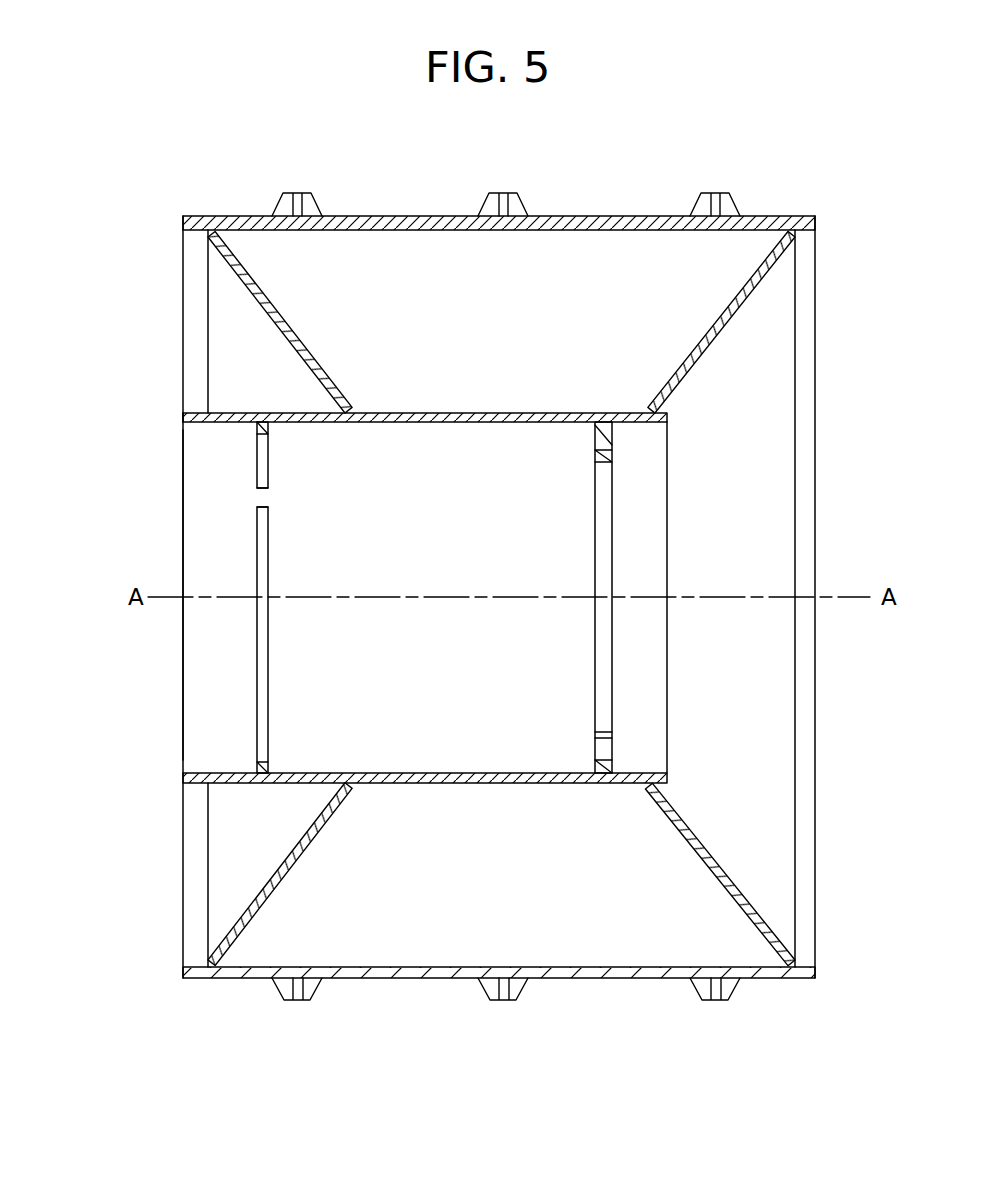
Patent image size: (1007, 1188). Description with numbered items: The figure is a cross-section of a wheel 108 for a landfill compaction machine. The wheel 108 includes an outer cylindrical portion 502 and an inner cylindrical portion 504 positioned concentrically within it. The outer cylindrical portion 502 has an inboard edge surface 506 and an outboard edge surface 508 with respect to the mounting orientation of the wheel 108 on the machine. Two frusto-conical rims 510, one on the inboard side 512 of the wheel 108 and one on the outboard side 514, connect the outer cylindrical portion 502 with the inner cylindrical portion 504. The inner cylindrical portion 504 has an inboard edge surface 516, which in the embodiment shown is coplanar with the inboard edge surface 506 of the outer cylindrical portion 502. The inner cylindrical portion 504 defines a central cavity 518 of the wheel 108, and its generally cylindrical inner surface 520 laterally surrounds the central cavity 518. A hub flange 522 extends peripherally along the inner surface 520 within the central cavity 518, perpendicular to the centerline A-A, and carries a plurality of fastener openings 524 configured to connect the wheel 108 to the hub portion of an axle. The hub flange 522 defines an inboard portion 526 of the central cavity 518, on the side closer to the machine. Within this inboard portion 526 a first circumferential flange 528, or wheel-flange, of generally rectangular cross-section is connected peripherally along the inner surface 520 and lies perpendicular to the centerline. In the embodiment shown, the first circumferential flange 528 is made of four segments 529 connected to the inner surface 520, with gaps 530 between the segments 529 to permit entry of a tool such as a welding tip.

The wheel 108 is at (796, 124).
The outer cylindrical portion 502 is at (566, 216).
The inner cylindrical portion 504 is at (472, 413).
The inboard edge surface 506 is at (178, 223).
The outboard edge surface 508 is at (820, 216).
The frusto-conical rim 510 is at (285, 323).
The inboard side 512 is at (167, 550).
The outboard side 514 is at (827, 498).
The inboard edge surface 516 is at (183, 418).
The central cavity 518 is at (428, 660).
The inner surface 520 is at (473, 773).
The hub flange 522 is at (607, 445).
The fastener openings 524 is at (605, 748).
The inboard portion 526 is at (310, 685).
The first circumferential flange 528 is at (262, 650).
The segments 529 is at (263, 460).
The gaps 530 is at (250, 494).